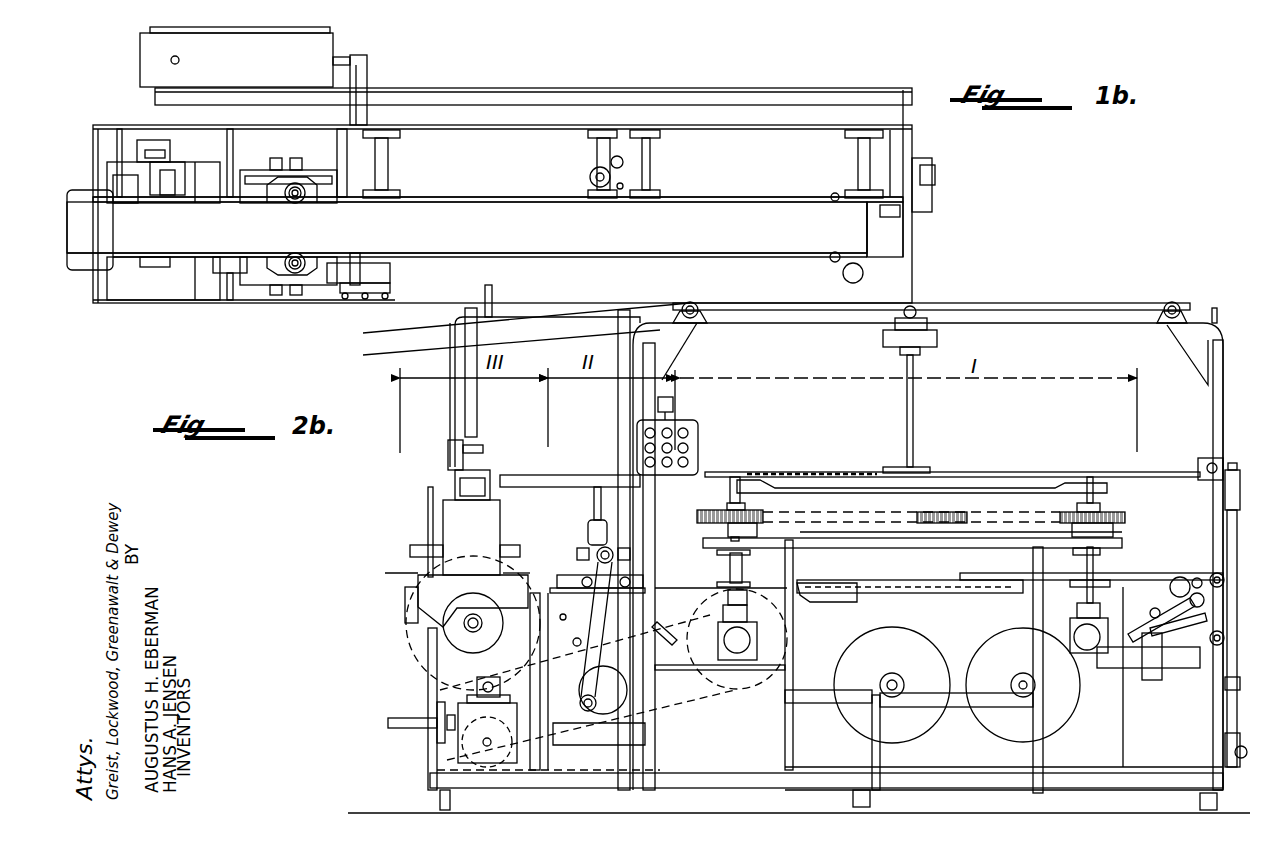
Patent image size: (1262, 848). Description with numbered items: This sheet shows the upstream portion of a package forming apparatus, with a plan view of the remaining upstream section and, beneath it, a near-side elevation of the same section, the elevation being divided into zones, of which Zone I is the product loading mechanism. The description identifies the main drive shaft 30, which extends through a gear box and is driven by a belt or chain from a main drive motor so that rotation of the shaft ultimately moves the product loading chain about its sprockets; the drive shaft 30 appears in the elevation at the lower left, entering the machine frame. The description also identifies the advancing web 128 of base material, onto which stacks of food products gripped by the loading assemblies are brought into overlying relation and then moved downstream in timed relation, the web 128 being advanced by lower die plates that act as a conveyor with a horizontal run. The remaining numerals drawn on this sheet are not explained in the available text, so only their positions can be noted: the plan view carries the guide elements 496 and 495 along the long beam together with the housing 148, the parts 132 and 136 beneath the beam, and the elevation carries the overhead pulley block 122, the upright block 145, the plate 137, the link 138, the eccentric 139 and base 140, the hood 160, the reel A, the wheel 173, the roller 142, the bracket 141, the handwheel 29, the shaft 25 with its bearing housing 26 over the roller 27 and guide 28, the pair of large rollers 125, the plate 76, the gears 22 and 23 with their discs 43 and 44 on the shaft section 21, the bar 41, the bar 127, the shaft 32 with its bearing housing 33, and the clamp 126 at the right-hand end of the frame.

In FIG. 1b, the housing 148 is at (160, 290).
In FIG. 1b, the rods 136 is at (312, 296).
In FIG. 2b, the rods 136 is at (598, 500).
In FIG. 1b, the block 132 is at (290, 290).
In FIG. 2b, the block 132 is at (585, 528).
In FIG. 1b, the guide rail 496 is at (530, 197).
In FIG. 2b, the guide rail 496 is at (787, 303).
In FIG. 1b, the strip 495 is at (398, 243).
In FIG. 2b, the strip 495 is at (613, 308).
In FIG. 2b, the pulley block 122 is at (883, 343).
In FIG. 2b, the block 145 is at (455, 527).
In FIG. 2b, the plate 137 is at (580, 577).
In FIG. 2b, the link 138 is at (613, 629).
In FIG. 2b, the eccentric 139 is at (597, 716).
In FIG. 2b, the base 140 is at (597, 740).
In FIG. 2b, the hood 160 is at (433, 640).
In FIG. 2b, the reel A is at (427, 650).
In FIG. 2b, the wheel 173 is at (477, 667).
In FIG. 2b, the roller 142 is at (477, 760).
In FIG. 2b, the bracket 141 is at (528, 753).
In FIG. 2b, the handwheel 29 is at (438, 703).
In FIG. 2b, the main drive shaft 30 is at (417, 728).
In FIG. 2b, the shaft 25 is at (730, 568).
In FIG. 2b, the bearing housing 26 is at (743, 652).
In FIG. 2b, the roller 27 is at (713, 689).
In FIG. 2b, the guide 28 is at (673, 713).
In FIG. 2b, the rollers 125 is at (988, 720).
In FIG. 2b, the plate 76 is at (837, 487).
In FIG. 2b, the gear 22 is at (700, 510).
In FIG. 2b, the disc 43 is at (710, 531).
In FIG. 2b, the shaft section 21 is at (947, 512).
In FIG. 2b, the gear 23 is at (1120, 510).
In FIG. 2b, the disc 44 is at (1122, 532).
In FIG. 2b, the bar 41 is at (867, 532).
In FIG. 2b, the web of base material 128 is at (1018, 570).
In FIG. 2b, the bar 127 is at (965, 593).
In FIG. 2b, the shaft 32 is at (1097, 563).
In FIG. 2b, the bearing housing 33 is at (1083, 653).
In FIG. 2b, the clamp 126 is at (1193, 572).